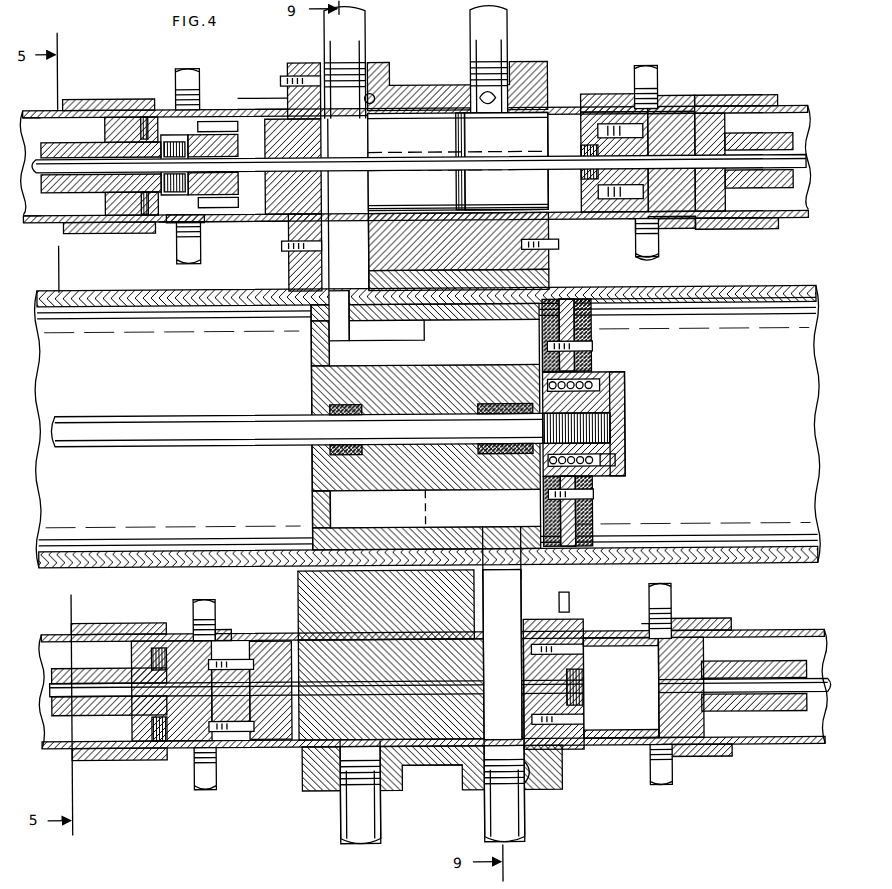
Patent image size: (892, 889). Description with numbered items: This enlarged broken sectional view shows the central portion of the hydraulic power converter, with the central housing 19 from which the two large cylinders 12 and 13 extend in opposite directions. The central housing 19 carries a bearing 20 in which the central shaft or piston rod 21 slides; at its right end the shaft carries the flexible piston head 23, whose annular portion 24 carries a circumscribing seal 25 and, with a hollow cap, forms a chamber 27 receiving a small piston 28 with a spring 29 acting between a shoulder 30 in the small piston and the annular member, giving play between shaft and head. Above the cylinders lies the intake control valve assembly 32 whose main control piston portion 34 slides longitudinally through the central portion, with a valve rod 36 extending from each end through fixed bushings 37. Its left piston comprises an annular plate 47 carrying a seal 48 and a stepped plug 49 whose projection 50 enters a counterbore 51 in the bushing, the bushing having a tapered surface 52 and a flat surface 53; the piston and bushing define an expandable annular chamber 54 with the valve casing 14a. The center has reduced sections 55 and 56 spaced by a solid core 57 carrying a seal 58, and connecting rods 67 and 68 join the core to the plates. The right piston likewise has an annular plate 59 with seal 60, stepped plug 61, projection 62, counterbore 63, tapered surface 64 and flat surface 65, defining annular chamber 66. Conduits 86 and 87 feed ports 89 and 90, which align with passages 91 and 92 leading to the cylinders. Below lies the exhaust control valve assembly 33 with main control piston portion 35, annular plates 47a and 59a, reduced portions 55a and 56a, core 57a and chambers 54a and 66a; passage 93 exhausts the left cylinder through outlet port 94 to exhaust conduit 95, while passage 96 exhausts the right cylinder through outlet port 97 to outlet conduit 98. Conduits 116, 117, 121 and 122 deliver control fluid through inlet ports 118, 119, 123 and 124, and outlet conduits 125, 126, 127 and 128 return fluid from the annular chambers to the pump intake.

The cylinder 12 is at (184, 379).
The cylinder 13 is at (761, 367).
The valve casing 14a is at (240, 238).
The central housing 19 is at (312, 385).
The bearing 20 is at (405, 452).
The central shaft or piston rod 21 is at (165, 442).
The flexible piston head 23 is at (632, 430).
The annular portion 24 is at (560, 348).
The seal 25 is at (596, 320).
The chamber 27 is at (605, 384).
The small piston 28 is at (627, 395).
The spring 29 is at (600, 468).
The shoulder 30 is at (618, 452).
The intake control valve assembly 32 is at (62, 208).
The outlet or exhaust control valve assembly 33 is at (90, 655).
The main control piston portion 34 is at (250, 126).
The main control piston portion 35 is at (598, 724).
The valve rod 36 is at (75, 160).
The fixed bushing 37 is at (157, 115).
The annular plate 47 is at (285, 100).
The annular plate 47a is at (262, 740).
The seal 48 is at (312, 118).
The stepped plug 49 is at (275, 242).
The projection 50 is at (252, 185).
The counterbore 51 is at (170, 194).
The tapered surface 52 is at (192, 124).
The flat surface 53 is at (197, 150).
The expandable annular chamber 54 is at (256, 120).
The annular chamber 54a is at (190, 762).
The annular reduced section 55 is at (358, 132).
The reduced portion 55a is at (312, 660).
The annular reduced section 56 is at (552, 130).
The reduced portion 56a is at (484, 655).
The solid core 57 is at (458, 172).
The core 57a is at (432, 749).
The seal 58 is at (468, 146).
The annular plate 59 is at (587, 118).
The annular plate 59a is at (562, 627).
The seal 60 is at (600, 115).
The stepped plug 61 is at (625, 205).
The projection 62 is at (674, 220).
The counterbore 63 is at (690, 135).
The tapered surface 64 is at (660, 115).
The flat surface 65 is at (662, 240).
The expandable annular chamber 66 is at (620, 110).
The annular chamber 66a is at (618, 648).
The thickened connecting rod 67 is at (358, 190).
The thickened connecting rod 68 is at (552, 190).
The conduit 86 is at (512, 35).
The conduit 87 is at (370, 45).
The port 89 is at (488, 92).
The port 90 is at (380, 96).
The passage 91 is at (312, 348).
The passage 92 is at (460, 328).
The passage 93 is at (312, 500).
The outlet port 94 is at (524, 772).
The exhaust conduit 95 is at (525, 828).
The passage 96 is at (600, 516).
The outlet port 97 is at (380, 758).
The outlet conduit 98 is at (340, 828).
The conduit 116 is at (650, 263).
The conduit 117 is at (205, 596).
The inlet port 118 is at (636, 232).
The inlet port 119 is at (218, 622).
The conduit 121 is at (182, 252).
The conduit 122 is at (670, 600).
The inlet port 123 is at (176, 230).
The inlet port 124 is at (673, 625).
The outlet conduit 125 is at (183, 68).
The outlet conduit 126 is at (652, 70).
The outlet conduit 127 is at (216, 788).
The outlet conduit 128 is at (672, 772).